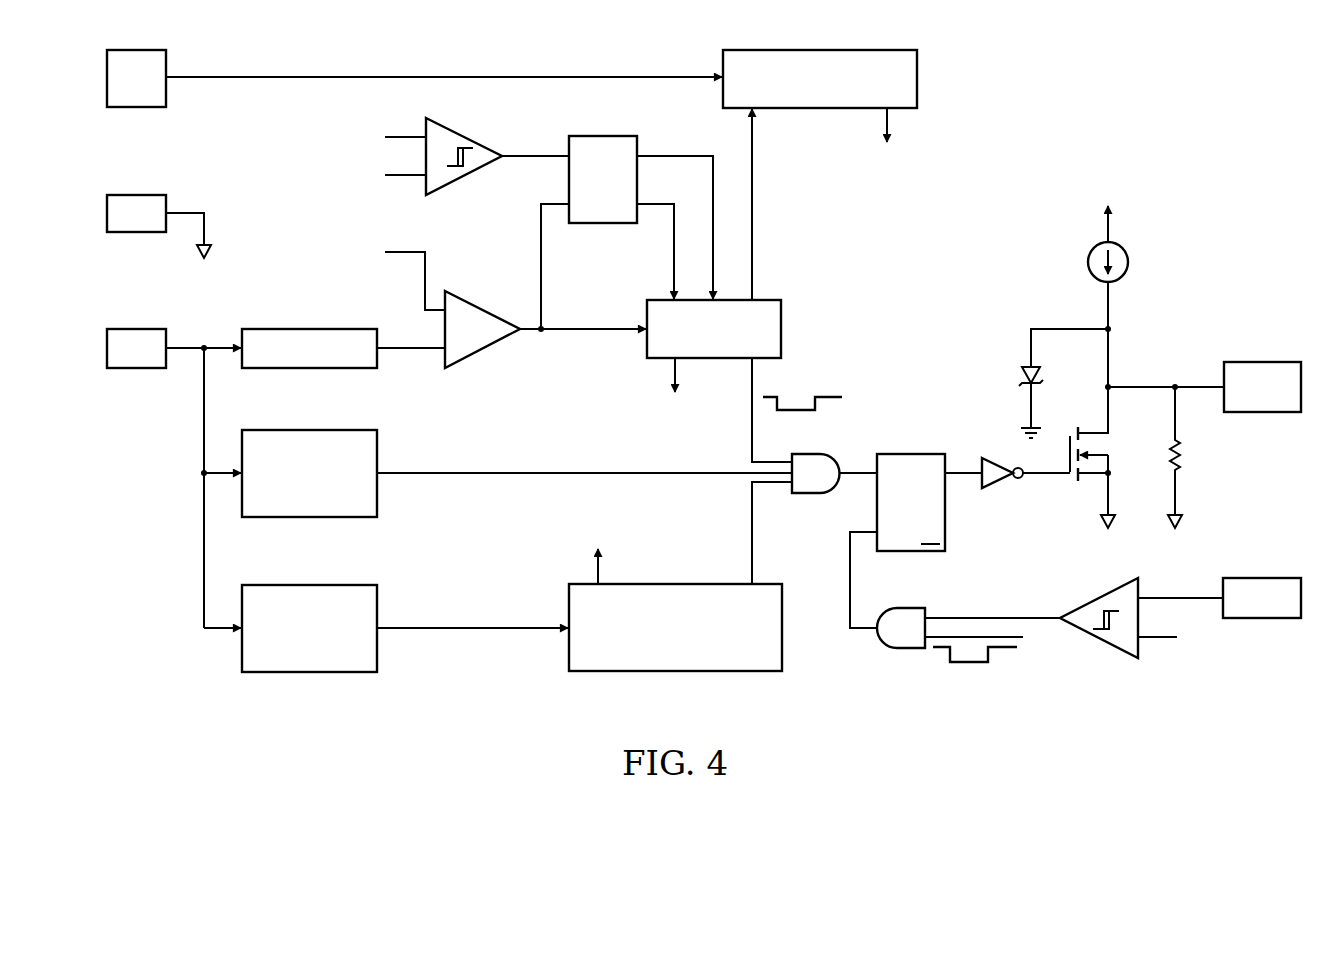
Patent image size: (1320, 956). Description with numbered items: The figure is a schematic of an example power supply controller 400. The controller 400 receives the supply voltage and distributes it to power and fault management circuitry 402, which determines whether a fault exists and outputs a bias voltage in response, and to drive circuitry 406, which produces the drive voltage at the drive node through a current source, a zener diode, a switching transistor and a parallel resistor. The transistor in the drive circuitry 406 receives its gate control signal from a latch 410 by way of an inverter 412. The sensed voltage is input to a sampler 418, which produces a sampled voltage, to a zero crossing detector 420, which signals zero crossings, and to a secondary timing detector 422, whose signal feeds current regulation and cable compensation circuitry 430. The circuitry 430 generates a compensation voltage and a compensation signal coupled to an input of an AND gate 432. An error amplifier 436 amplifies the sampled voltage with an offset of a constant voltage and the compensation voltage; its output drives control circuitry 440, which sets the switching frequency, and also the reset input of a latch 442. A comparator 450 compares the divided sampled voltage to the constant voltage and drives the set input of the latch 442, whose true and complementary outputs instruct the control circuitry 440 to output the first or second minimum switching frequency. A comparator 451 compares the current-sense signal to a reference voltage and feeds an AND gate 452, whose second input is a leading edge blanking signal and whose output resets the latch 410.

The power supply controller 400 is at (1180, 85).
The power and fault management circuitry 402 is at (822, 50).
The drive circuitry 406 is at (1228, 278).
The latch 410 is at (912, 454).
The inverter 412 is at (1002, 484).
The sampler 418 is at (310, 329).
The zero crossing detector 420 is at (310, 517).
The secondary timing detector 422 is at (310, 672).
The current regulation and cable compensation circuitry 430 is at (676, 671).
The AND gate 432 is at (812, 493).
The error amplifier 436 is at (486, 307).
The control circuitry 440 is at (782, 320).
The latch 442 is at (600, 136).
The comparator 450 is at (466, 132).
The comparator 451 is at (1098, 640).
The AND gate 452 is at (905, 648).